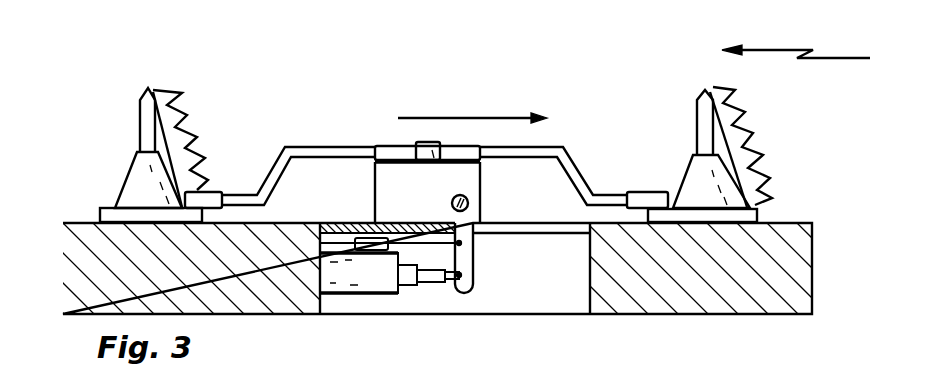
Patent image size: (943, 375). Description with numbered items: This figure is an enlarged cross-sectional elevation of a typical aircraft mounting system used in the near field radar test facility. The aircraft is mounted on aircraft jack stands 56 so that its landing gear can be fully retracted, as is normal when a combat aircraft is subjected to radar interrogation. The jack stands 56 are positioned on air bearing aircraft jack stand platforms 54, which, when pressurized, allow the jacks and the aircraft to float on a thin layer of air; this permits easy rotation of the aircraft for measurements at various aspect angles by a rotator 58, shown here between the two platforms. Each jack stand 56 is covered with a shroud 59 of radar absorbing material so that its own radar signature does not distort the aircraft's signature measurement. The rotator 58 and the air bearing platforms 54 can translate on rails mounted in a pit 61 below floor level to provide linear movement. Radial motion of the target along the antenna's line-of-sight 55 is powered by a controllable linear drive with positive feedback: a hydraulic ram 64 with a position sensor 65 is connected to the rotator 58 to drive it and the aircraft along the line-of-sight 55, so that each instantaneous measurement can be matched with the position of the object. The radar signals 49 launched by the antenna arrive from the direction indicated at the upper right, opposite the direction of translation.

The radar signals 49 is at (782, 48).
The air bearing aircraft jack stand platforms 54 is at (100, 214).
The line-of-sight arrow 55 is at (490, 113).
The aircraft jack stands 56 is at (142, 130).
The rotator 58 is at (392, 145).
The shrouds 59 is at (183, 120).
The pit 61 is at (536, 280).
The hydraulic ram 64 is at (372, 275).
The position sensor 65 is at (372, 242).